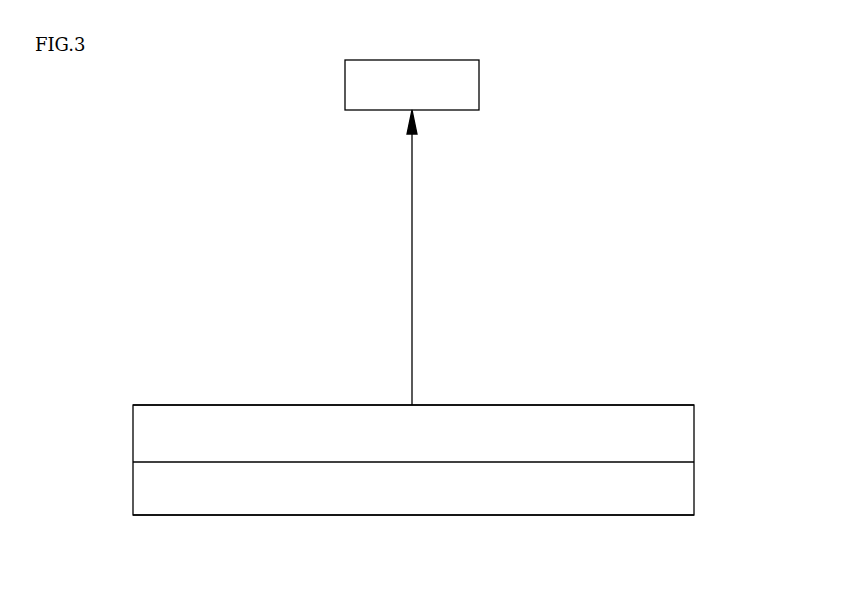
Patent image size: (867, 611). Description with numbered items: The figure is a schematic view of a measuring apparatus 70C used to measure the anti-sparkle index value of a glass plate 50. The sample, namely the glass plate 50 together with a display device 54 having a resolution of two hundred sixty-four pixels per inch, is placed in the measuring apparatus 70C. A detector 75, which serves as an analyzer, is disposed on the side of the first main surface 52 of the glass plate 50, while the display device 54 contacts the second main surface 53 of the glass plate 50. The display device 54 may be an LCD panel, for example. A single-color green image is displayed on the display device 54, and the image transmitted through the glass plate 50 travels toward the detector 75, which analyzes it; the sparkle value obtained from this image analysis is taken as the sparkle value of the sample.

The measuring apparatus 70C is at (655, 118).
The detector 75 is at (463, 82).
The glass plate 50 is at (683, 427).
The first main surface 52 is at (650, 405).
The second main surface 53 is at (668, 457).
The display device 54 is at (653, 487).